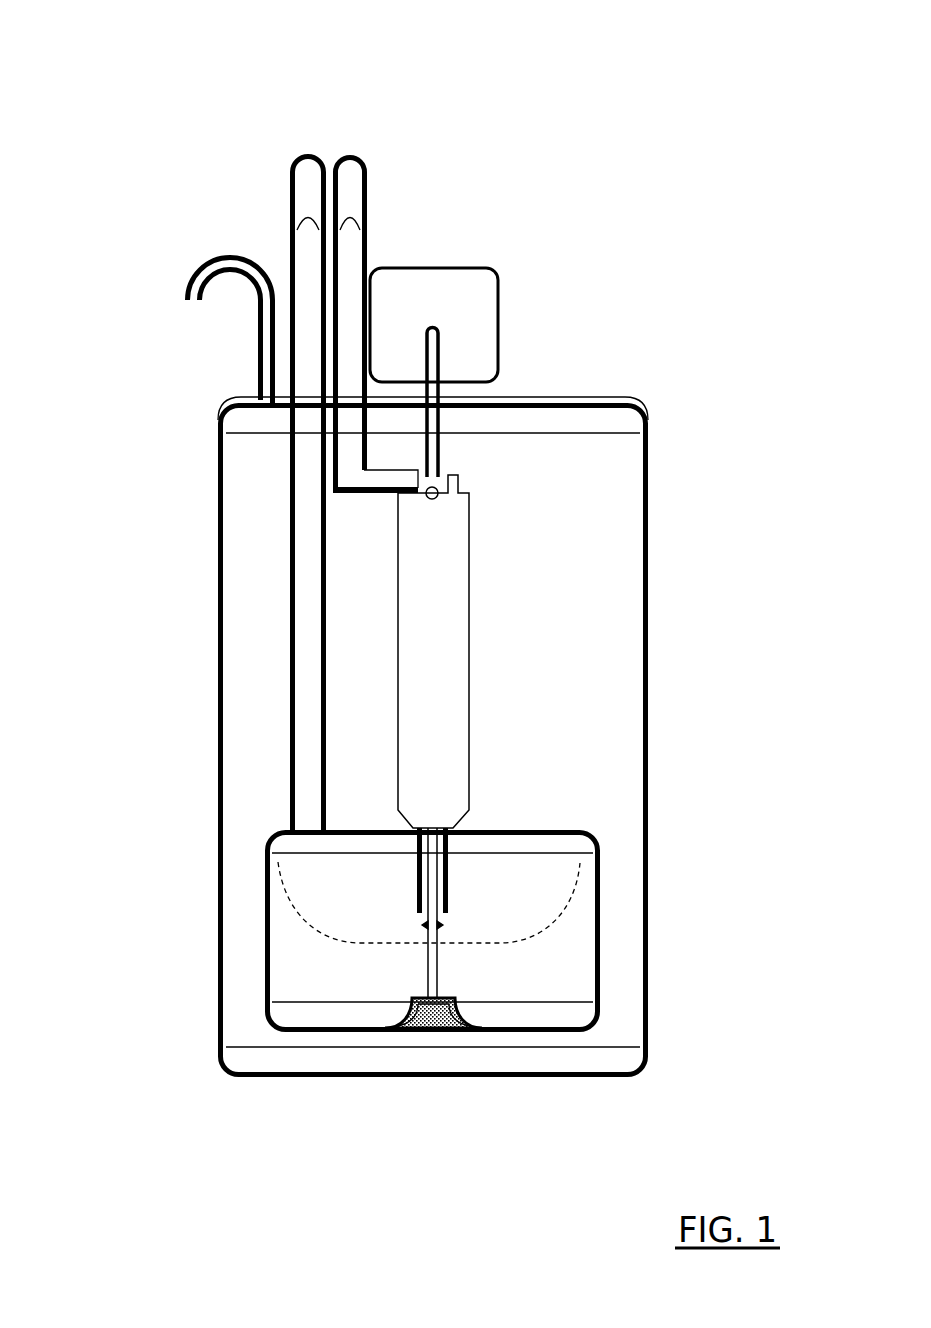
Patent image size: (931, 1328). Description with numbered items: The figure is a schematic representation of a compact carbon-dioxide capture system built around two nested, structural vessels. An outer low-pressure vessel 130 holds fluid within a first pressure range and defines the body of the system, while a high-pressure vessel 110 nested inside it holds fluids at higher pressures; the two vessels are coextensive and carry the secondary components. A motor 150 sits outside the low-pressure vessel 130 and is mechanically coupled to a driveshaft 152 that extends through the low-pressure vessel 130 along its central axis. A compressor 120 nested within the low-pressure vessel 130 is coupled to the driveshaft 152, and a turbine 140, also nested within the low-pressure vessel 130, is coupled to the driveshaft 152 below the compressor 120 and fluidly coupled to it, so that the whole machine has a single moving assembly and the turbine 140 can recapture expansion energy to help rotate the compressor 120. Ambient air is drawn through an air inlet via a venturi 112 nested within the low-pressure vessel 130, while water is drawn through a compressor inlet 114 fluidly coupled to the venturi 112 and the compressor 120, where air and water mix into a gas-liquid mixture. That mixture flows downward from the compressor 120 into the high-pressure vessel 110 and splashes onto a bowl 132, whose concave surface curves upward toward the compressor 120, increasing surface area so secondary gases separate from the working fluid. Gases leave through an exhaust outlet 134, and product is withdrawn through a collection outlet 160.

The high-pressure vessel 110 is at (577, 957).
The venturi 112 is at (357, 230).
The compressor inlet 114 is at (437, 489).
The compressor 120 is at (447, 583).
The low-pressure vessel 130 is at (547, 675).
The bowl 132 is at (557, 883).
The exhaust outlet 134 is at (298, 578).
The turbine 140 is at (425, 1010).
The motor 150 is at (473, 307).
The driveshaft 152 is at (428, 972).
The collection outlet 160 is at (225, 267).